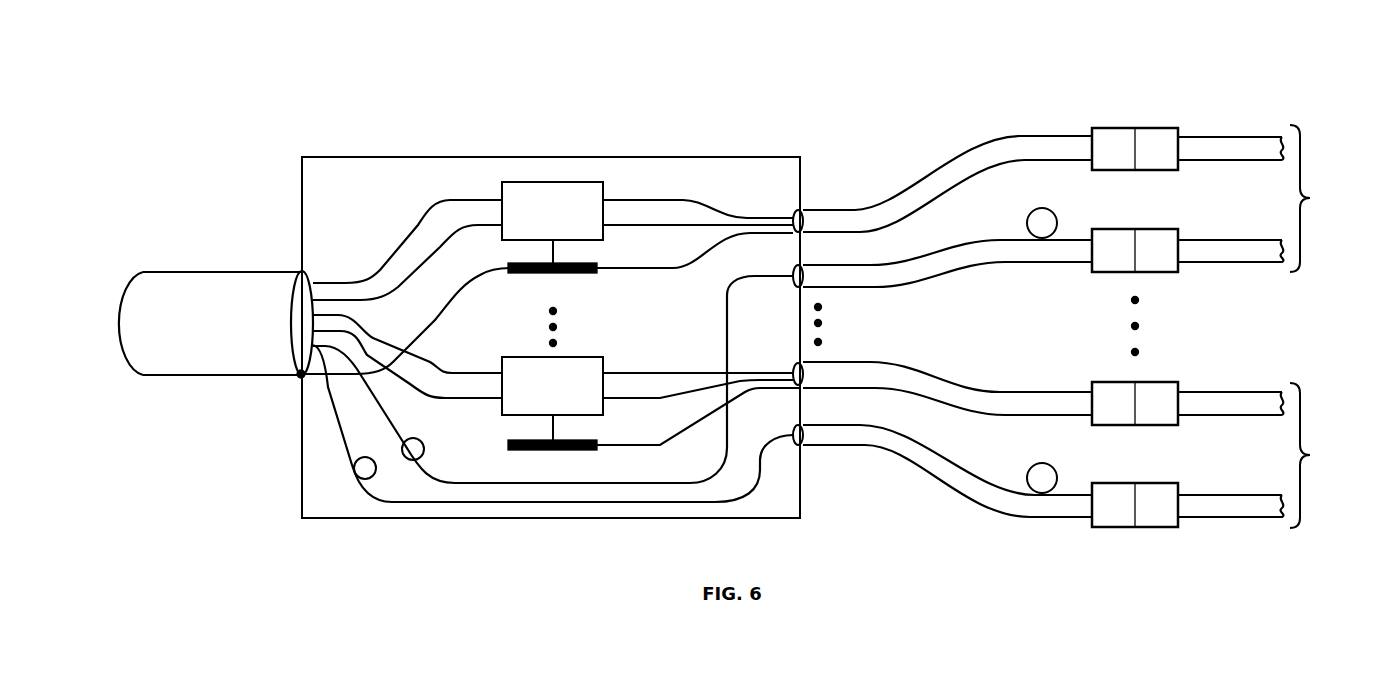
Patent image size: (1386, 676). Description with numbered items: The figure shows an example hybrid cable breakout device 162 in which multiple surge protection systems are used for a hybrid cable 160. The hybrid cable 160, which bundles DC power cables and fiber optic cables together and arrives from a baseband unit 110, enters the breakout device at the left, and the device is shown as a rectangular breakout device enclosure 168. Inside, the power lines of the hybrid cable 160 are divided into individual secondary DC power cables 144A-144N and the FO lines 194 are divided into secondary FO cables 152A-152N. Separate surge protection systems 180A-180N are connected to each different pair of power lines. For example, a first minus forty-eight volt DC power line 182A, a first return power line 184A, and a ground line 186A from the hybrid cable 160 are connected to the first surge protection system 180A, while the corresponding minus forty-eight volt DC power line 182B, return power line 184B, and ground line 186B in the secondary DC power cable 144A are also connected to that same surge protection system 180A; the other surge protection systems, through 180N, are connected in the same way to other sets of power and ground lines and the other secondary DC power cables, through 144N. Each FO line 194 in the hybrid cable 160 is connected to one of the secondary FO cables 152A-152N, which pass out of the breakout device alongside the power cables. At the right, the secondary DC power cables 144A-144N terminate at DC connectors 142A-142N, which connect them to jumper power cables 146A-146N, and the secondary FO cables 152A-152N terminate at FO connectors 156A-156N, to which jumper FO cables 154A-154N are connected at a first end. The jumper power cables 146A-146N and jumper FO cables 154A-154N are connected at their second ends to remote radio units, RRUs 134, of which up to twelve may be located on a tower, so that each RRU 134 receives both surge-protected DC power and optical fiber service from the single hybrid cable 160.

The baseband unit (BBU) 110 is at (97, 324).
The RRU 134 is at (1338, 326).
The DC connector 142A is at (1113, 171).
The DC connector 142N is at (1113, 426).
The secondary DC power cable 144A is at (948, 162).
The secondary DC power cable 144N is at (1000, 392).
The jumper power cable 146A is at (1242, 137).
The jumper power cable 146N is at (1242, 392).
The secondary FO cable 152A is at (936, 276).
The secondary FO cable 152N is at (931, 479).
The jumper FO cable 154A is at (1242, 240).
The jumper FO cable 154N is at (1242, 495).
The FO connector 156A is at (1113, 273).
The FO connector 156N is at (1113, 528).
The hybrid cable 160 is at (214, 377).
The hybrid cable breakout device 162 is at (538, 76).
The breakout device 168 is at (395, 157).
The surge protection system 180A is at (524, 228).
The surge protection system 180N is at (524, 401).
The −48 VDC power line 182A is at (343, 283).
The −48 VDC power line 182B is at (667, 199).
The return power line 184A is at (296, 300).
The return power line 184B is at (707, 226).
The ground line 186A is at (441, 322).
The ground line 186B is at (665, 269).
The FO line 194 is at (345, 447).